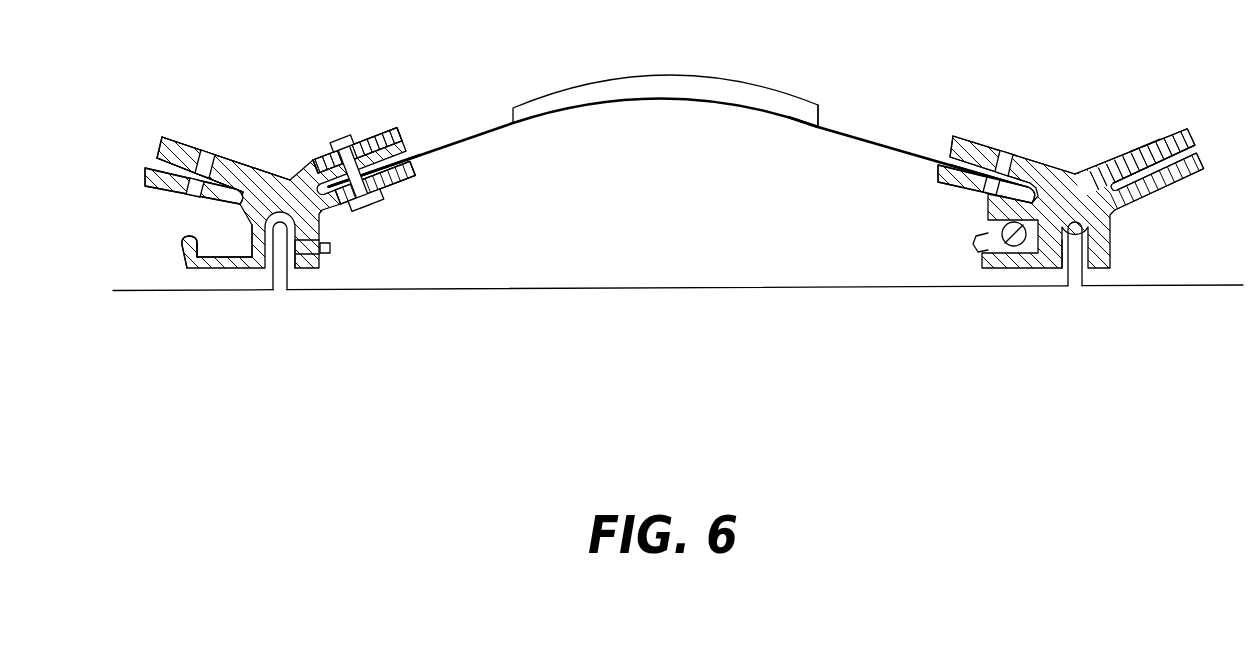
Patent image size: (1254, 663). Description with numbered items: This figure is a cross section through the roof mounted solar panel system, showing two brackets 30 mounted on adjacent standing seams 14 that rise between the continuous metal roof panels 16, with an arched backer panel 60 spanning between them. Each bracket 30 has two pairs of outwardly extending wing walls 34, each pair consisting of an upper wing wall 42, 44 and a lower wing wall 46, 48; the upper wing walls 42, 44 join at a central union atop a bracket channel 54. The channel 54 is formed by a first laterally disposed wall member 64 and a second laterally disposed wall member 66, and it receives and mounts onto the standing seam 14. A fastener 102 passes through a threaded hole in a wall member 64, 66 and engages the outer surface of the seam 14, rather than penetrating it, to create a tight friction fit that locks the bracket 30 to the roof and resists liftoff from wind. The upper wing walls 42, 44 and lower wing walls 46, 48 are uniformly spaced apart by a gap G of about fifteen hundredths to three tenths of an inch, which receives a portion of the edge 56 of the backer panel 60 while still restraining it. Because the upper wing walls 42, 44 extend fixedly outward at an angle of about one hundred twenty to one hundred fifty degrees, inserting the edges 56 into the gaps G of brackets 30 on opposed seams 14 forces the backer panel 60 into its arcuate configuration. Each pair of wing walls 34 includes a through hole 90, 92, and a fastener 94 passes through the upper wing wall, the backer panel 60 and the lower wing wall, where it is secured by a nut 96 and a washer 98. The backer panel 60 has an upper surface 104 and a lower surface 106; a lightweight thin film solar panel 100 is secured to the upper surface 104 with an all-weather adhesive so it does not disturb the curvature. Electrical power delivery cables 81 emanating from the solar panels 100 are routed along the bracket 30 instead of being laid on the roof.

The standing seam 14 is at (278, 283).
The roof panel 16 is at (184, 292).
The bracket 30 is at (239, 158).
The pair of wing walls 34 is at (121, 125).
The upper wing wall 42 is at (181, 137).
The upper wing wall 44 is at (384, 133).
The lower wing wall 46 is at (150, 188).
The lower wing wall 48 is at (414, 174).
The bracket channel 54 is at (293, 275).
The edge of the backer panel 56 is at (418, 156).
The backer panel 60 is at (856, 140).
The first laterally disposed wall member 64 is at (259, 268).
The second laterally disposed wall member 66 is at (303, 280).
The electrical power delivery cable 81 is at (977, 240).
The through hole 90 is at (210, 155).
The through hole 92 is at (326, 152).
The fastener 94 is at (344, 137).
The nut 96 is at (370, 211).
The washer 98 is at (382, 200).
The thin film solar panel 100 is at (713, 77).
The fastener 102 is at (331, 252).
The upper surface 104 is at (821, 110).
The lower surface 106 is at (791, 120).
The gap G is at (153, 162).